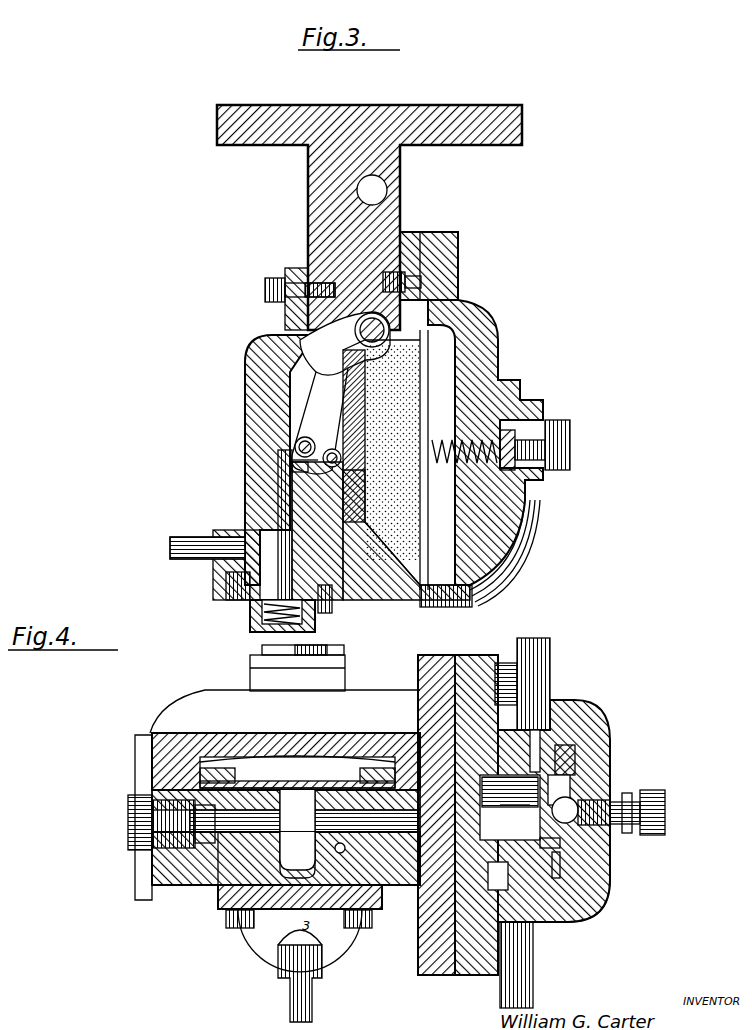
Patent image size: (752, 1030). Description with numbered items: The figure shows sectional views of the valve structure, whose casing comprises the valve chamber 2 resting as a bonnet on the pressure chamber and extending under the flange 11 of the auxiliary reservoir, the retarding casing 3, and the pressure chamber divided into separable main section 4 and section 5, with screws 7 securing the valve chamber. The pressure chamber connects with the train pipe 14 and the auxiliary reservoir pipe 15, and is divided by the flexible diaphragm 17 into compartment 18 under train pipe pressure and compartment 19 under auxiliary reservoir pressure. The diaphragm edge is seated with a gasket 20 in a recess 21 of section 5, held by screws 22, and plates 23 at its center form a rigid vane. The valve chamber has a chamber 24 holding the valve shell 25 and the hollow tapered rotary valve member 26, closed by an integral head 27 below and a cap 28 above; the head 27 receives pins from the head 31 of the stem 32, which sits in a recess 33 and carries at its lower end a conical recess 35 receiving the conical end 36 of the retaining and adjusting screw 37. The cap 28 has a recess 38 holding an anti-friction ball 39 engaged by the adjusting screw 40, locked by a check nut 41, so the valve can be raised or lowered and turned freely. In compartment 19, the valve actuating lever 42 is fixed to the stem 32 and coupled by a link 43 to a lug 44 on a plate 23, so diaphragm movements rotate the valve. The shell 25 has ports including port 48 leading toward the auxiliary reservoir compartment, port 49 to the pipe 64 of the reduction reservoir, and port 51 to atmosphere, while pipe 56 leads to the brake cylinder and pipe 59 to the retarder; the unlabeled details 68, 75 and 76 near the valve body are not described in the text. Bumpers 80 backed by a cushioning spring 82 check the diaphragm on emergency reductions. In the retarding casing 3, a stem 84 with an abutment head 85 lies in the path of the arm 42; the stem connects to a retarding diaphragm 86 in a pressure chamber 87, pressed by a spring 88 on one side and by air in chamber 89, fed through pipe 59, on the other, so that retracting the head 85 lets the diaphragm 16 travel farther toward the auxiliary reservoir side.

In FIG. 3, the valve chamber 2 is at (308, 266).
In FIG. 4, the valve chamber 2 is at (592, 760).
In FIG. 3, the retarding casing 3 is at (268, 410).
In FIG. 4, the retarding casing 3 is at (362, 702).
In FIG. 3, the main section 4 is at (352, 565).
In FIG. 4, the main section 4 is at (182, 870).
In FIG. 3, the section 5 is at (488, 522).
In FIG. 4, the section 5 is at (196, 712).
In FIG. 4, the screws 7 is at (504, 676).
In FIG. 4, the flange 11 is at (515, 797).
In FIG. 3, the train pipe 14 is at (478, 598).
In FIG. 4, the auxiliary reservoir pipe 15 is at (341, 854).
In FIG. 4, the diaphragm 16 is at (286, 800).
In FIG. 3, the flexible diaphragm 17 is at (362, 487).
In FIG. 3, the compartment 18 is at (422, 382).
In FIG. 3, the compartment 19 is at (322, 388).
In FIG. 3, the gasket 20 is at (428, 300).
In FIG. 4, the gasket 20 is at (225, 768).
In FIG. 3, the recess 21 is at (440, 262).
In FIG. 3, the screws 22 is at (404, 240).
In FIG. 3, the plates 23 is at (338, 420).
In FIG. 4, the chamber 24 is at (562, 760).
In FIG. 4, the valve shell 25 is at (578, 924).
In FIG. 4, the rotary valve member 26 is at (560, 862).
In FIG. 4, the integral head 27 is at (368, 920).
In FIG. 4, the cap 28 is at (560, 836).
In FIG. 4, the head 31 is at (420, 760).
In FIG. 3, the stem 32 is at (360, 322).
In FIG. 4, the stem 32 is at (334, 812).
In FIG. 4, the recess 33 is at (416, 878).
In FIG. 4, the conical recess 35 is at (222, 826).
In FIG. 4, the conical end 36 is at (216, 812).
In FIG. 4, the retaining and adjusting screw 37 is at (150, 812).
In FIG. 4, the recess 38 is at (640, 838).
In FIG. 4, the anti-friction ball 39 is at (574, 806).
In FIG. 4, the adjusting screw 40 is at (614, 810).
In FIG. 4, the check nut 41 is at (650, 820).
In FIG. 3, the valve actuating lever 42 is at (318, 354).
In FIG. 4, the valve actuating lever 42 is at (240, 920).
In FIG. 3, the link 43 is at (292, 468).
In FIG. 3, the lug 44 is at (296, 446).
In FIG. 4, the port 48 is at (572, 792).
In FIG. 4, the port 49 is at (538, 756).
In FIG. 4, the port 51 is at (518, 920).
In FIG. 3, the pipe 56 is at (374, 191).
In FIG. 3, the pipe 59 is at (178, 550).
In FIG. 4, the pipe 59 is at (292, 1004).
In FIG. 4, the pipe 64 is at (546, 676).
In FIG. 4, the valve stem 68 is at (562, 866).
In FIG. 4, the chamber 75 is at (510, 809).
In FIG. 4, the piston 76 is at (495, 800).
In FIG. 3, the bumpers 80 is at (428, 450).
In FIG. 3, the cushioning spring 82 is at (505, 424).
In FIG. 3, the stem 84 is at (280, 512).
In FIG. 3, the abutment head 85 is at (290, 462).
In FIG. 3, the retarding diaphragm 86 is at (248, 605).
In FIG. 3, the pressure chamber 87 is at (258, 632).
In FIG. 3, the spring 88 is at (316, 626).
In FIG. 3, the chamber 89 is at (216, 570).
In FIG. 4, the chamber 89 is at (262, 936).